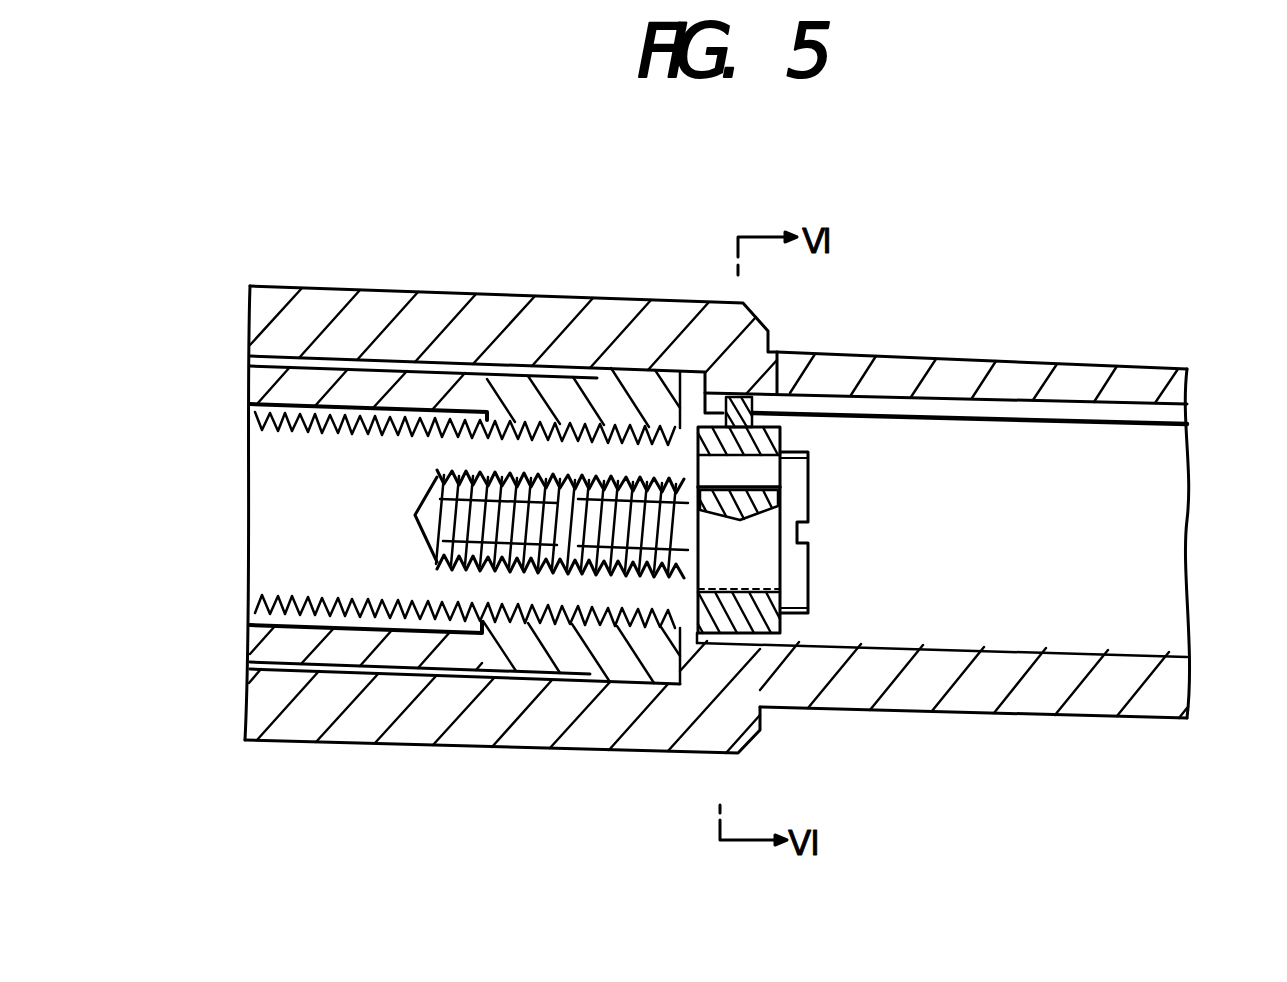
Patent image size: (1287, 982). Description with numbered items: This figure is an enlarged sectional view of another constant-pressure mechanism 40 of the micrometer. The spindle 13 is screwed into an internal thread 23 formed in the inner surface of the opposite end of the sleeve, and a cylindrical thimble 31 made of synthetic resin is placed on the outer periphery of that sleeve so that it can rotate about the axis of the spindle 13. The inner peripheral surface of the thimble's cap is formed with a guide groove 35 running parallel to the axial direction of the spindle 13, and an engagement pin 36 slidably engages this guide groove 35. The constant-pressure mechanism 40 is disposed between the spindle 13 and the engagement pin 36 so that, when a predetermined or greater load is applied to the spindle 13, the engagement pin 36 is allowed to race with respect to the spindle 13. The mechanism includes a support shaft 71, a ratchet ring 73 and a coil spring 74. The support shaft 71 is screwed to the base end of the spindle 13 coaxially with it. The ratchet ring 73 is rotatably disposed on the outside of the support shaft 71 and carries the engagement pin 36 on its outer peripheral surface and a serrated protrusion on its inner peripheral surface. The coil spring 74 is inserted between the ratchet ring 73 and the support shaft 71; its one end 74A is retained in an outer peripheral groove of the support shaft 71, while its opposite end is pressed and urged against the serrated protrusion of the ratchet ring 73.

The spindle 13 is at (262, 498).
The internal thread 23 is at (538, 430).
The thimble 31 is at (1034, 376).
The guide groove 35 is at (1142, 421).
The engagement pin 36 is at (766, 396).
The constant-pressure mechanism 40 is at (1040, 541).
The support shaft 71 is at (793, 580).
The ratchet ring 73 is at (787, 439).
The coil spring 74 is at (780, 622).
The one end of the coil spring 74A is at (767, 473).